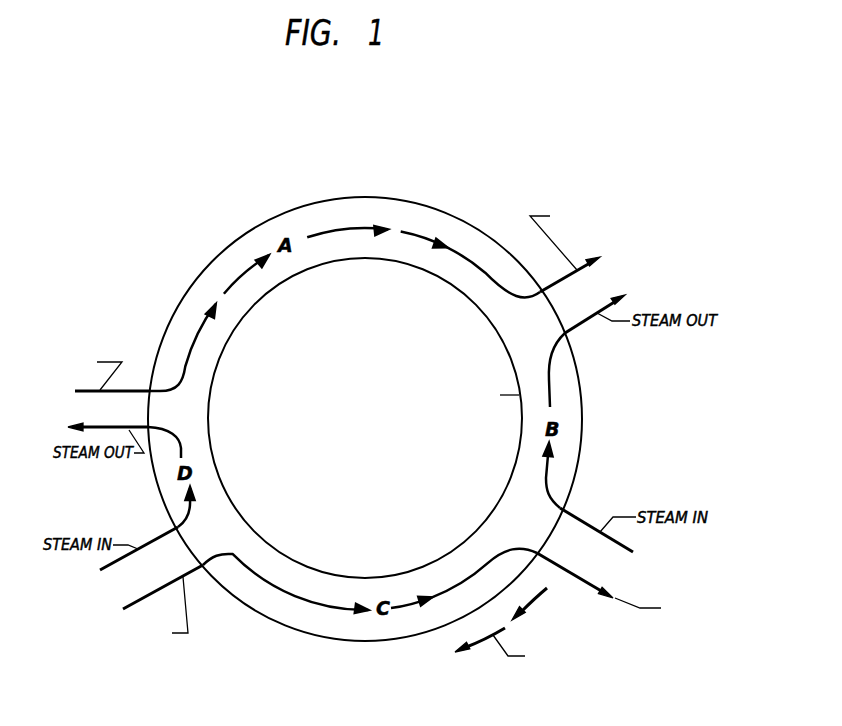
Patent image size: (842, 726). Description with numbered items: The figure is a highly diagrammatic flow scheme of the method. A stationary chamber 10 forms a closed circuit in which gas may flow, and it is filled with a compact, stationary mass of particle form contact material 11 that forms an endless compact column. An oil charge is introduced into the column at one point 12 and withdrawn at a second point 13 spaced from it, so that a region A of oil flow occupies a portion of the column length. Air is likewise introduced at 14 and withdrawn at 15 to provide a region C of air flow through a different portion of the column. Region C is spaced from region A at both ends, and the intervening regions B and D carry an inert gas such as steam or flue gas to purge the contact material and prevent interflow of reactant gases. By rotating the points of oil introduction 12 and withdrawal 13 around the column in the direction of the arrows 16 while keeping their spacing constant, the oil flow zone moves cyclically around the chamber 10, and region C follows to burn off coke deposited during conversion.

The stationary chamber 10 is at (518, 437).
The particle form contact material 11 is at (508, 508).
The point of oil introduction 12 is at (78, 391).
The point of oil withdrawal 13 is at (600, 258).
The air introduction point 14 is at (125, 606).
The air withdrawal point 15 is at (580, 578).
The arrows indicating direction of zone rotation 16 is at (458, 655).